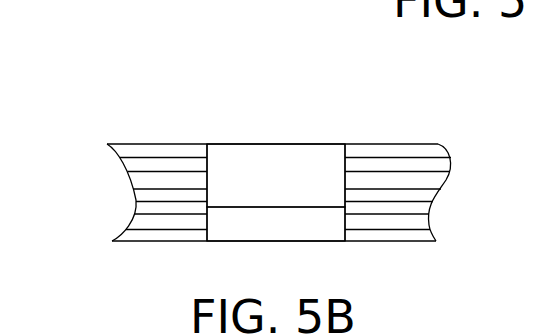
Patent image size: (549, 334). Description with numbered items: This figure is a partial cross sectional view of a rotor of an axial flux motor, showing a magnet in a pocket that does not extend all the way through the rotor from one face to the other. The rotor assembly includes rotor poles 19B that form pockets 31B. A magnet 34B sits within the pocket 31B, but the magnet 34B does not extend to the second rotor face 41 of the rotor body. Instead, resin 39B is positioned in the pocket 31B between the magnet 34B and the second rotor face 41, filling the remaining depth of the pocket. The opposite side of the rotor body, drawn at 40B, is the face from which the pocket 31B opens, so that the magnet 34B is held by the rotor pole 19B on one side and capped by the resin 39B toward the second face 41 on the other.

The pocket 31B is at (238, 78).
The rotor pole 19B is at (131, 242).
The left layer stack 40B is at (172, 242).
The magnet 34B is at (272, 144).
The resin 39B is at (266, 230).
The second face 41 is at (382, 144).